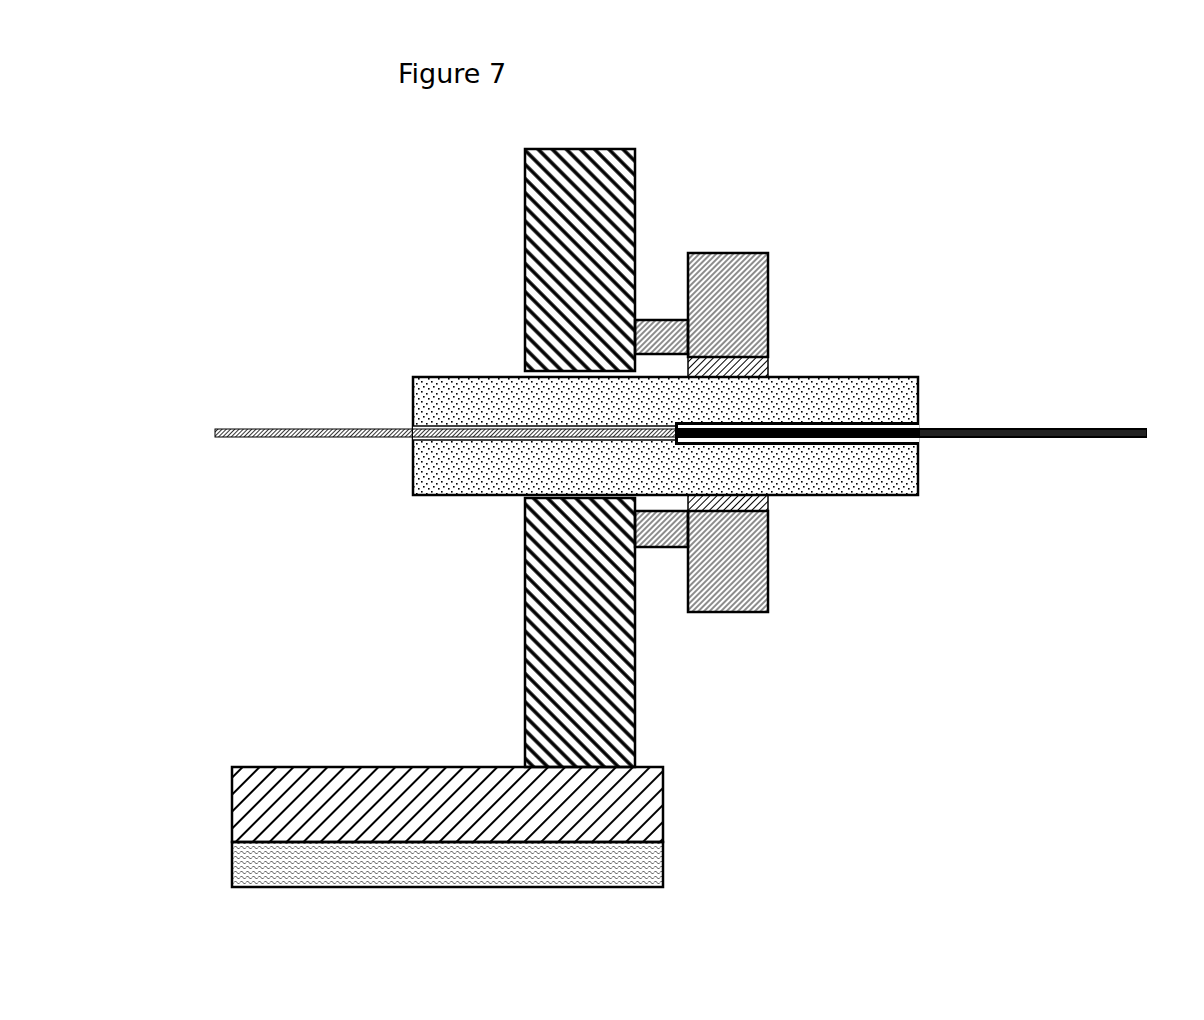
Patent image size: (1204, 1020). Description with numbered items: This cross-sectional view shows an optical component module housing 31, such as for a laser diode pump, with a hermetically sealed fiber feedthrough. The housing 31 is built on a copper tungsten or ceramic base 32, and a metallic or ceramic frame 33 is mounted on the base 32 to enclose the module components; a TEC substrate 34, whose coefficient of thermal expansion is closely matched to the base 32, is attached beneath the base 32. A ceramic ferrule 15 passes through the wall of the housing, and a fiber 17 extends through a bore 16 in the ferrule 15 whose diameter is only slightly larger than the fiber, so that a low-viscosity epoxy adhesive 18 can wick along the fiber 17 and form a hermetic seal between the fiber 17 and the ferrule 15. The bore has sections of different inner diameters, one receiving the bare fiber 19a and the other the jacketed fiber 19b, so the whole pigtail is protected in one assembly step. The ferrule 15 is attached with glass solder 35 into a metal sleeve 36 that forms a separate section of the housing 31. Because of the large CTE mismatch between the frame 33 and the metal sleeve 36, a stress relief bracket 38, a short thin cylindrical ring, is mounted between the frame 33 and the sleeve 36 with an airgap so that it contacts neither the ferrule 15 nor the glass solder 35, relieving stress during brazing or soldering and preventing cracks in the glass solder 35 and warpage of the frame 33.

The module housing 31 is at (612, 131).
The frame 33 is at (540, 227).
The stress relief bracket 38 is at (657, 318).
The metal sleeve 36 is at (740, 277).
The glass solder 35 is at (770, 364).
The ceramic ferrule 15 is at (828, 497).
The base 32 is at (667, 789).
The TEC substrate 34 is at (668, 861).
The adhesive 18 is at (920, 422).
The bore 16 is at (918, 445).
The fiber 17 is at (982, 418).
The bare fiber 19a is at (310, 438).
The jacketed fiber 19b is at (1043, 438).